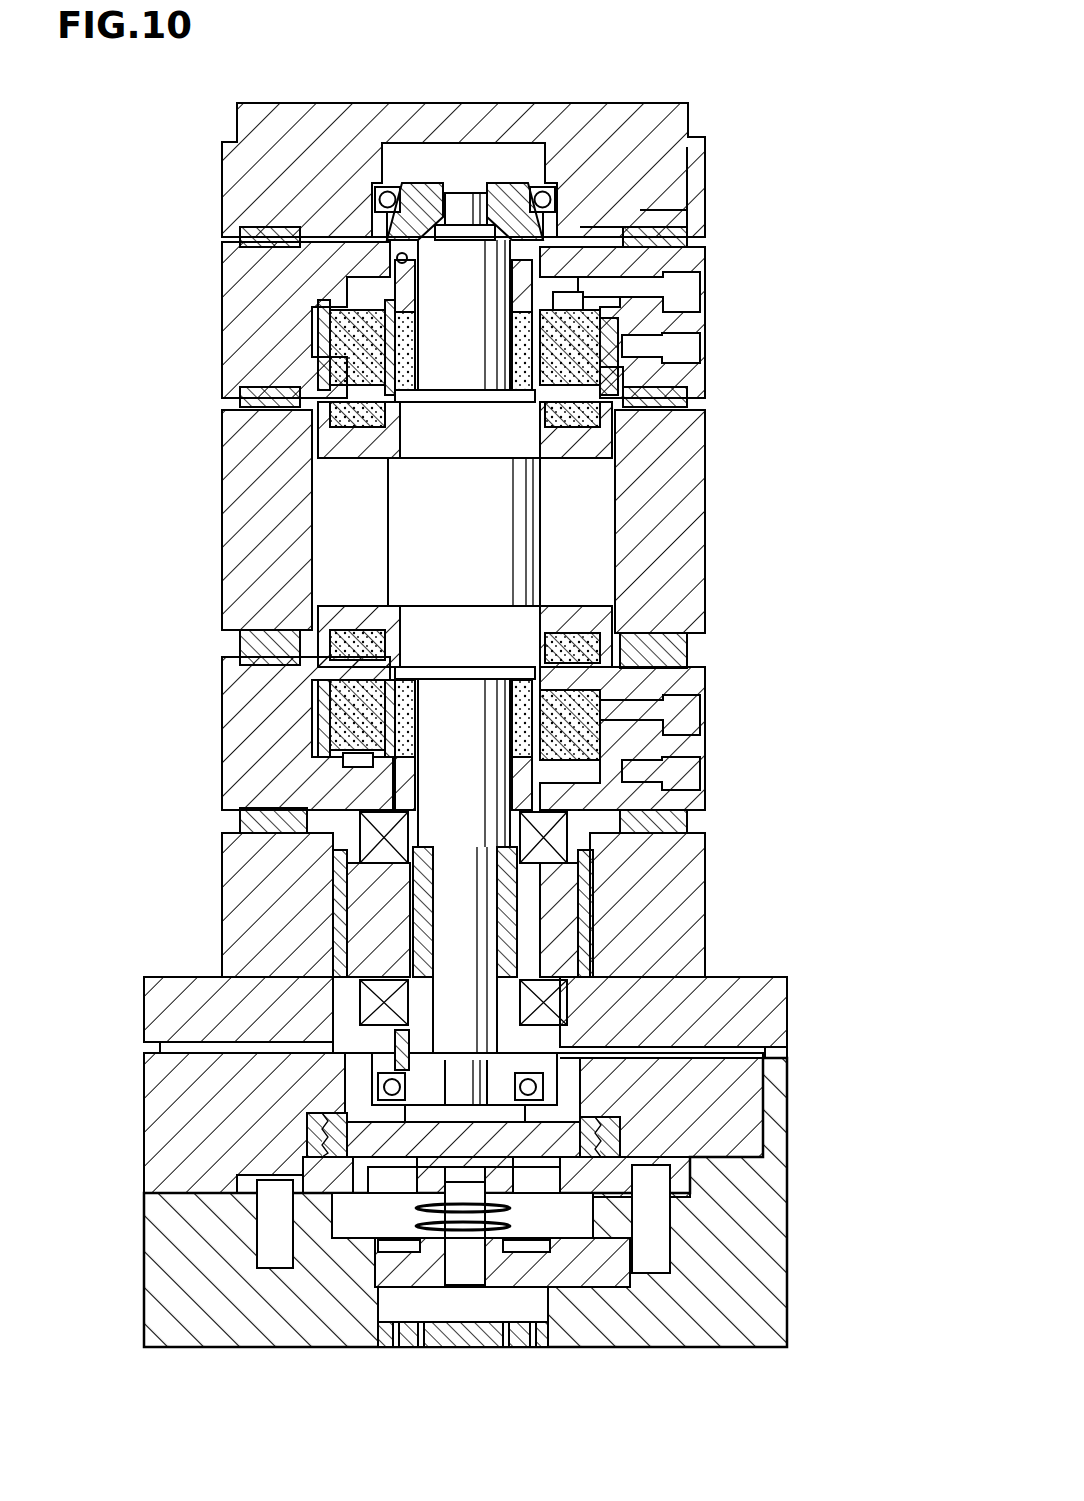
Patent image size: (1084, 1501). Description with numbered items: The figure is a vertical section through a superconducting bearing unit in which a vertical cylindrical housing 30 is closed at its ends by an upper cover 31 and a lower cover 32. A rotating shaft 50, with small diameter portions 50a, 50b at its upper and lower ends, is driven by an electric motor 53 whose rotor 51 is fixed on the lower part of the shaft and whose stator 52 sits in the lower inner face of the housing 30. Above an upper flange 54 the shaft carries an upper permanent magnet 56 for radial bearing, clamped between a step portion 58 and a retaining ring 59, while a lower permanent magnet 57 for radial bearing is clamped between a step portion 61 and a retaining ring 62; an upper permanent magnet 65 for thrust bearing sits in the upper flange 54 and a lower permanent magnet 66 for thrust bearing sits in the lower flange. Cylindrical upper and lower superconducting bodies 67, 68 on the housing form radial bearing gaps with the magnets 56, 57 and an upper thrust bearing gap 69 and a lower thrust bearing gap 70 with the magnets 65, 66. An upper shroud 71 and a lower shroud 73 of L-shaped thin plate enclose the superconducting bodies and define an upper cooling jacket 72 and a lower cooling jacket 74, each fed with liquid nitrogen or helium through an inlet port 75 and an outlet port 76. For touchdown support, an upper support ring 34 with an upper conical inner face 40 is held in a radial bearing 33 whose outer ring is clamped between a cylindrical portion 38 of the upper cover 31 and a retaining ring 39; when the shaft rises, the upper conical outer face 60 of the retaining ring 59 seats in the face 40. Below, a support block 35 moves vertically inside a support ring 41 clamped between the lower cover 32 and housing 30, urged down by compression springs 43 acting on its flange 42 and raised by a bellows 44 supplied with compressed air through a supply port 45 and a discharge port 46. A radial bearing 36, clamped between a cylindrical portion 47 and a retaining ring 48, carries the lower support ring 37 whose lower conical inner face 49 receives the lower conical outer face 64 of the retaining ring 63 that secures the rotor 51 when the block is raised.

The housing 30 is at (690, 512).
The upper cover 31 is at (500, 142).
The lower cover 32 is at (770, 1312).
The radial bearing 33 is at (541, 185).
The upper support ring 34 is at (388, 185).
The support block 35 is at (775, 1145).
The radial bearing 36 is at (575, 1075).
The lower support ring 37 is at (580, 1060).
The cylindrical portion 38 is at (690, 170).
The retaining ring 39 is at (655, 200).
The upper conical inner face 40 is at (300, 258).
The support ring 41 is at (640, 1140).
The flange 42 is at (560, 1200).
The compression springs 43 is at (600, 1145).
The bellows 44 is at (600, 1237).
The supply port 45 is at (400, 1347).
The discharge port 46 is at (510, 1347).
The cylindrical portion 47 is at (390, 1090).
The retaining ring 48 is at (355, 1050).
The lower conical inner face 49 is at (600, 1045).
The rotating shaft 50 is at (540, 540).
The small diameter portion 50a is at (452, 195).
The small diameter portion 50b is at (445, 1070).
The rotor 51 is at (530, 910).
The stator 52 is at (570, 940).
The electric motor 53 is at (700, 875).
The upper flange 54 is at (560, 480).
The upper permanent magnet for radial bearing 56 is at (650, 325).
The lower permanent magnet for radial bearing 57 is at (650, 755).
The step portion 58 is at (600, 375).
The retaining ring 59 is at (706, 258).
The upper conical outer face 60 is at (690, 220).
The step portion 61 is at (700, 685).
The retaining ring 62 is at (640, 810).
The retaining ring 63 is at (700, 1005).
The lower conical outer face 64 is at (395, 1060).
The upper permanent magnet for thrust bearing 65 is at (612, 450).
The lower permanent magnet for thrust bearing 66 is at (660, 625).
The upper superconducting body 67 is at (345, 305).
The lower superconducting body 68 is at (360, 745).
The upper thrust bearing gap 69 is at (395, 372).
The lower thrust bearing gap 70 is at (370, 633).
The upper shroud 71 is at (330, 410).
The upper cooling jacket 72 is at (310, 340).
The lower shroud 73 is at (330, 660).
The lower cooling jacket 74 is at (315, 700).
The inlet port 75 is at (690, 300).
The outlet port 76 is at (685, 355).